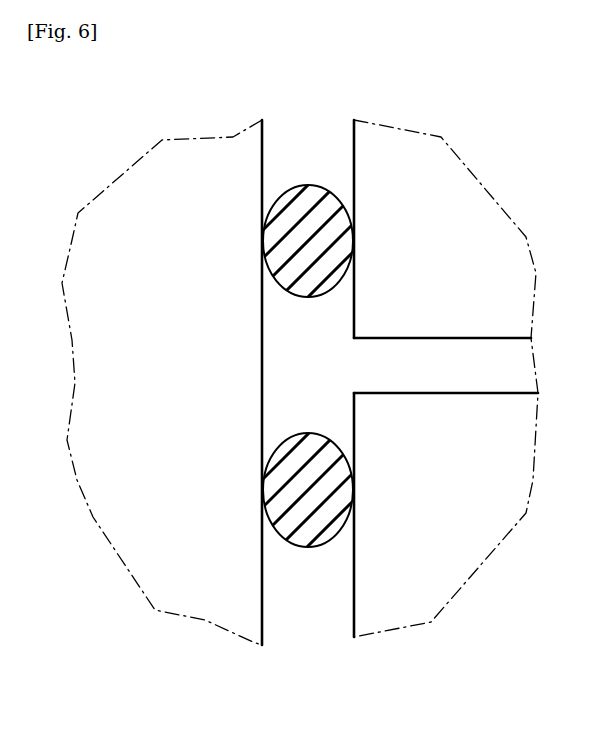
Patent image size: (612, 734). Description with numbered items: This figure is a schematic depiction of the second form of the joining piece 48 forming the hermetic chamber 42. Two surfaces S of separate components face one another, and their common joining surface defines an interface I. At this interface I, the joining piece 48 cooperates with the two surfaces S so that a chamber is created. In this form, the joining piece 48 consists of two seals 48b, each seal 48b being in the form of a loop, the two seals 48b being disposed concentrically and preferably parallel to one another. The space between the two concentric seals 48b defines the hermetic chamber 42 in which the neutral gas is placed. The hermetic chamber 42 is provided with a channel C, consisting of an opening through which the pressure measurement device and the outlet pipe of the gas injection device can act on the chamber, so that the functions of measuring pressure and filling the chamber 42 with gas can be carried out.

The hermetic chamber 42 is at (312, 370).
The joining piece 48 is at (376, 229).
The seal 48b is at (356, 482).
The channel C is at (473, 358).
The surface S is at (263, 160).
The interface I is at (305, 622).